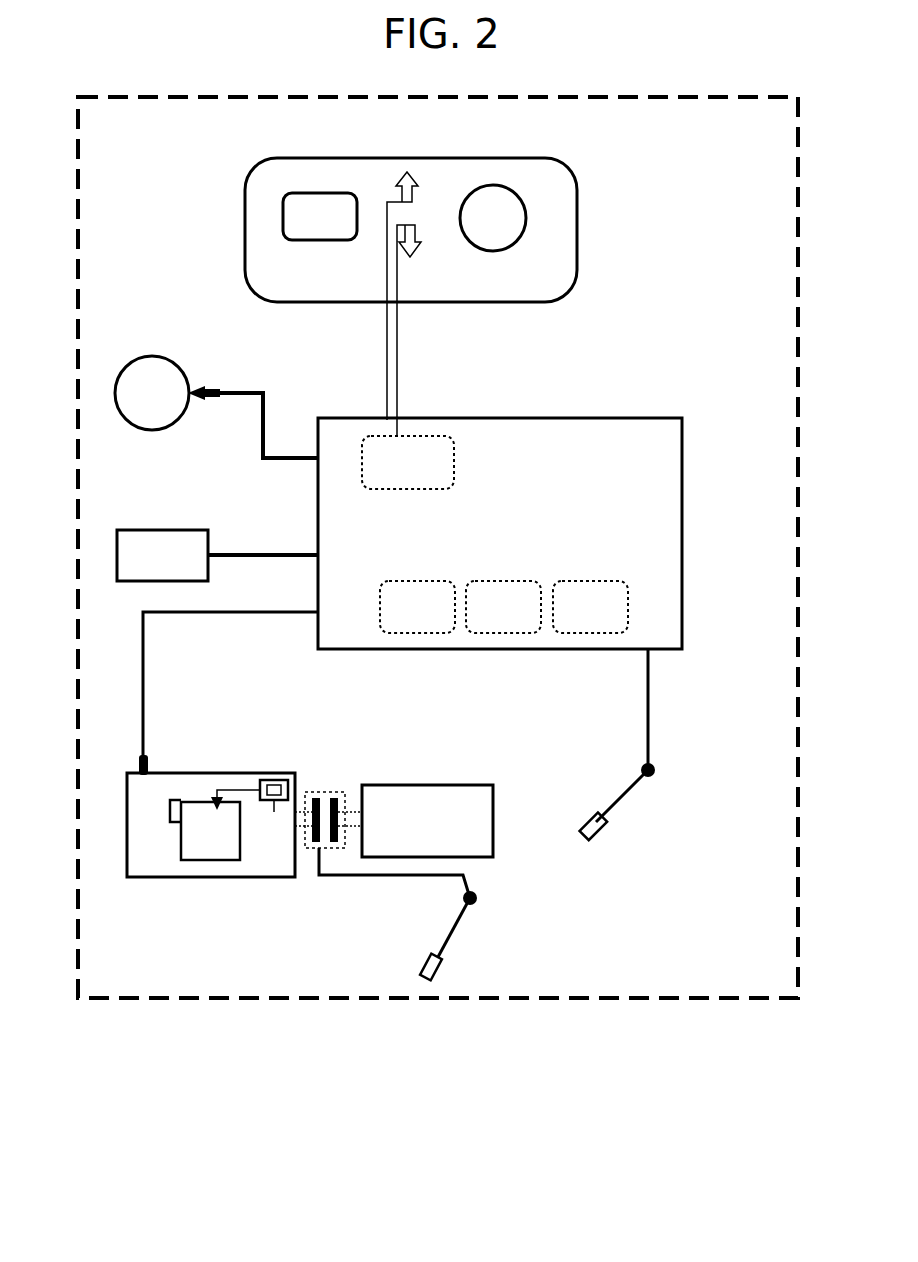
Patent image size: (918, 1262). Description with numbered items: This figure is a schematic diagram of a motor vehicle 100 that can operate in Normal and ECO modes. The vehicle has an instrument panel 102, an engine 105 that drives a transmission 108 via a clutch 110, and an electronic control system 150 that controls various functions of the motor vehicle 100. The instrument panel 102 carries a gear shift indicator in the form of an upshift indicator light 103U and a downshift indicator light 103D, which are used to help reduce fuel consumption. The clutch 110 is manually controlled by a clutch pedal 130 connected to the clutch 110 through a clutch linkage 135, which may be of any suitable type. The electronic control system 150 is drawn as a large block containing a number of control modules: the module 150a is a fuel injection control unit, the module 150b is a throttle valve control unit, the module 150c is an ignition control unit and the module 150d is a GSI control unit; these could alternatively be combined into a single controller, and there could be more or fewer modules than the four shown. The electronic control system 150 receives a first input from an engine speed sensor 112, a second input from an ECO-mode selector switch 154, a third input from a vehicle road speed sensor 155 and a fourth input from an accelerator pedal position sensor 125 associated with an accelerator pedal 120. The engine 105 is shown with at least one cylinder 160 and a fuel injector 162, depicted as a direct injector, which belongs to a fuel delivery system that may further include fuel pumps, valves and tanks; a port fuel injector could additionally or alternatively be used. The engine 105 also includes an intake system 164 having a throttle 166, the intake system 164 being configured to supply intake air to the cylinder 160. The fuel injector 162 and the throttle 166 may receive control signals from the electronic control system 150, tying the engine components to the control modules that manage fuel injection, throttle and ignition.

The motor vehicle 100 is at (250, 1008).
The instrument panel 102 is at (372, 230).
The upshift indicator light 103U is at (415, 182).
The downshift indicator light 103D is at (410, 253).
The vehicle road speed sensor 155 is at (208, 383).
The electronic control system 150 is at (500, 533).
The fuel injection control unit 150a is at (413, 635).
The throttle valve control unit 150b is at (500, 635).
The ignition control unit 150c is at (573, 635).
The GSI control unit 150d is at (363, 458).
The ECO-mode selector switch 154 is at (217, 555).
The engine speed sensor 112 is at (148, 765).
The engine 105 is at (140, 878).
The cylinder 160 is at (240, 852).
The fuel injector 162 is at (176, 822).
The intake system 164 is at (277, 824).
The throttle 166 is at (276, 800).
The clutch 110 is at (313, 795).
The transmission 108 is at (427, 821).
The clutch linkage 135 is at (383, 876).
The clutch pedal 130 is at (453, 942).
The accelerator pedal position sensor 125 is at (652, 773).
The accelerator pedal 120 is at (620, 808).